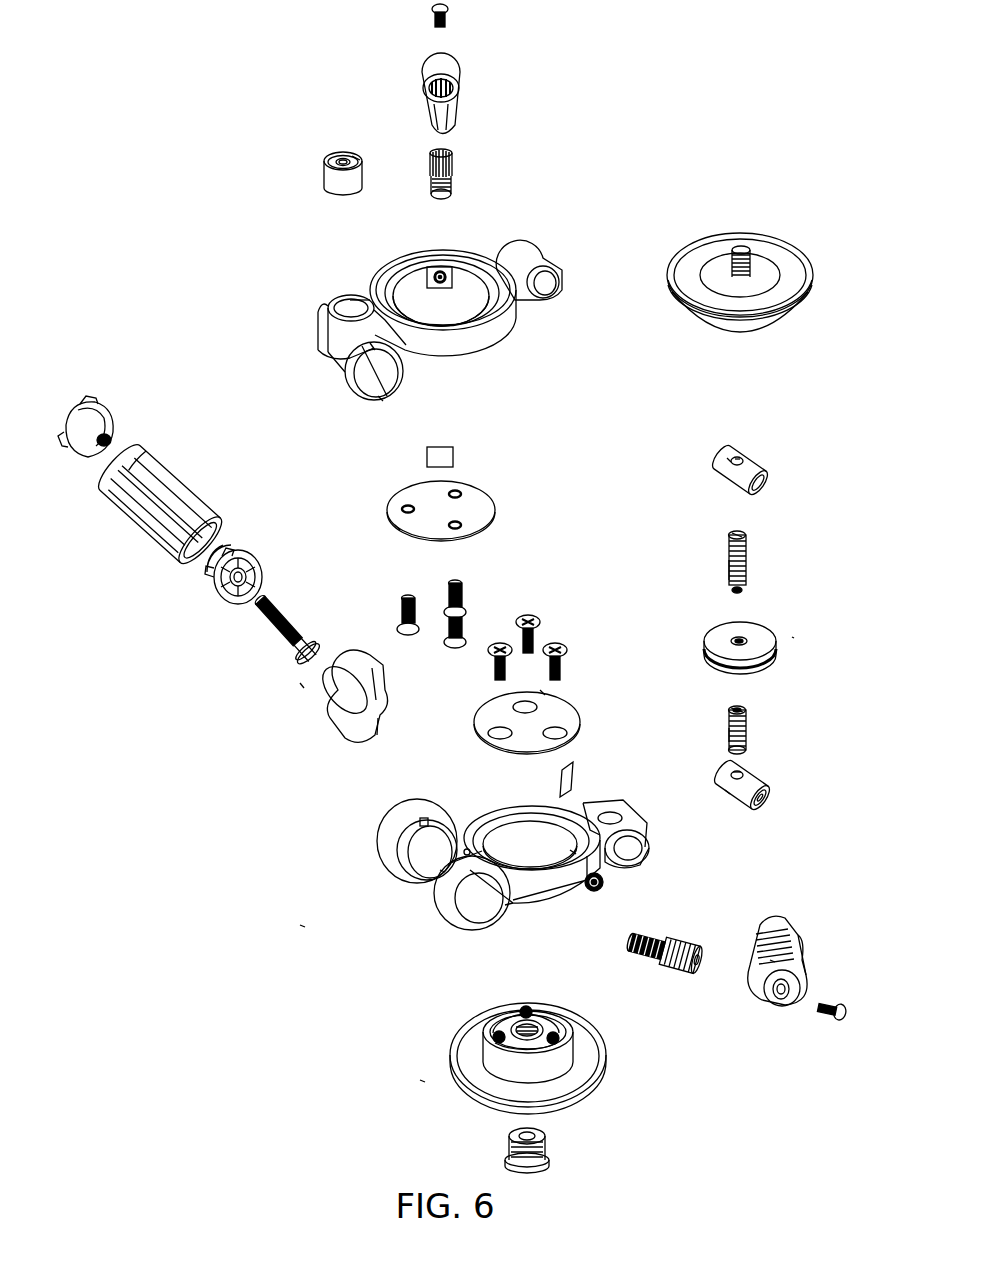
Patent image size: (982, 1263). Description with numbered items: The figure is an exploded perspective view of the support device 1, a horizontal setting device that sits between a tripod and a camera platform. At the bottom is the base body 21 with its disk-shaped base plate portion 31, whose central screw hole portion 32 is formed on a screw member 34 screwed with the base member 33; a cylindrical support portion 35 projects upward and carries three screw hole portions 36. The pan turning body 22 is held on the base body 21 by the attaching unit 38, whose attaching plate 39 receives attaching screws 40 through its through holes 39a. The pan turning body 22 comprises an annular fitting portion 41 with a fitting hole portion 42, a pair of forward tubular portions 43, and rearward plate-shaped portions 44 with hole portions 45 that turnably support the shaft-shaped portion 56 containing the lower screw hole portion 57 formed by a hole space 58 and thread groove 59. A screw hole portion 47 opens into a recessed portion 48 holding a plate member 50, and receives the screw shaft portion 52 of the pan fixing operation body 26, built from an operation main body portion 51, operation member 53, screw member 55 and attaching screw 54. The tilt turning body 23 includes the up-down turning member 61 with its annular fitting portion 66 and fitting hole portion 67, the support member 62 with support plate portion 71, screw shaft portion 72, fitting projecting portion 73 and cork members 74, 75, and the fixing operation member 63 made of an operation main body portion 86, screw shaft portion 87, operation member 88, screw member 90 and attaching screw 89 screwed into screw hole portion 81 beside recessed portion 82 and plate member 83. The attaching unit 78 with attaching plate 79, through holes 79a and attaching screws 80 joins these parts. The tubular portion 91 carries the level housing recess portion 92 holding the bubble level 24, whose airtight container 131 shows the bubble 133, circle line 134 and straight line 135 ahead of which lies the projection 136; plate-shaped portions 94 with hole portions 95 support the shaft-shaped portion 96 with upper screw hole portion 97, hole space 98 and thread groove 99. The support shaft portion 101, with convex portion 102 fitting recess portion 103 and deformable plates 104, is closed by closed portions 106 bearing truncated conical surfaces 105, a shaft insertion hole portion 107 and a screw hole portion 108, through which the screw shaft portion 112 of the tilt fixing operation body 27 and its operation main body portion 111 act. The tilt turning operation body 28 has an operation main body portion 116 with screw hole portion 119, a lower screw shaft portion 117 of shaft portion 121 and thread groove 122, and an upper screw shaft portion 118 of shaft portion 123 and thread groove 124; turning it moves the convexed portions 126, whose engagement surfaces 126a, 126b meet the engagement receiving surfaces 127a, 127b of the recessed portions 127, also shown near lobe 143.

The support device 1 is at (288, 930).
The base body 21 is at (403, 1070).
The pan turning body 22 is at (362, 855).
The tilt turning body 23 is at (227, 282).
The bubble level 24 is at (343, 156).
The pan fixing operation body 26 is at (810, 920).
The tilt fixing operation body 27 is at (295, 690).
The tilt turning operation body 28 is at (792, 634).
The base plate portion 31 is at (585, 1048).
The screw hole portion 32 is at (537, 1132).
The base member 33 is at (602, 1080).
The screw member 34 is at (548, 1158).
The support portion 35 is at (502, 1063).
The screw hole portions 36 is at (497, 1032).
The attaching unit 38 is at (561, 624).
The attaching plate 39 is at (570, 712).
The through holes 39a is at (523, 701).
The attaching screws 40 is at (528, 614).
The annular fitting portion 41 is at (557, 877).
The fitting hole portion 42 is at (528, 860).
The tubular portions 43 is at (442, 900).
The plate-shaped portions 44 is at (618, 803).
The hole portions 45 is at (610, 814).
The screw hole portion 47 is at (597, 888).
The recessed portion 48 is at (573, 853).
The plate member 50 is at (559, 788).
The operation main body portion 51 is at (775, 927).
The screw shaft portion 52 is at (650, 933).
The operation member 53 is at (797, 950).
The attaching screw 54 is at (833, 1002).
The screw member 55 is at (650, 957).
The shaft-shaped portion 56 is at (760, 783).
The lower screw hole portion 57 is at (743, 775).
The hole space 58 is at (733, 773).
The thread groove 59 is at (740, 780).
The up-down turning member 61 is at (500, 332).
The support member 62 is at (688, 277).
The fixing operation member 63 is at (462, 74).
The annular fitting portion 66 is at (478, 342).
The fitting hole portion 67 is at (447, 312).
The support plate portion 71 is at (813, 280).
The screw shaft portion 72 is at (743, 246).
The fitting projecting portion 73 is at (747, 334).
The cork member 74 is at (695, 252).
The cork member 75 is at (717, 280).
The attaching unit 78 is at (400, 480).
The attaching plate 79 is at (413, 526).
The through holes 79a is at (404, 508).
The attaching screws 80 is at (402, 612).
The screw hole portion 81 is at (445, 271).
The recessed portion 82 is at (432, 267).
The plate member 83 is at (453, 452).
The operation main body portion 86 is at (450, 57).
The screw shaft portion 87 is at (455, 188).
The operation member 88 is at (454, 113).
The attaching screw 89 is at (449, 9).
The screw member 90 is at (455, 158).
The tubular portion 91 is at (330, 365).
The level housing recess portion 92 is at (351, 298).
The plate-shaped portions 94 is at (530, 243).
The hole portions 95 is at (517, 257).
The shaft-shaped portion 96 is at (758, 470).
The upper screw hole portion 97 is at (742, 461).
The hole space 98 is at (738, 458).
The thread groove 99 is at (730, 459).
The support shaft portion 101 is at (143, 503).
The convex portion 102 is at (182, 478).
The recess portion 103 is at (392, 383).
The deformable plates 104 is at (135, 450).
The truncated conical surfaces 105 is at (88, 405).
The closed portions 106 is at (82, 400).
The shaft insertion hole portion 107 is at (239, 583).
The screw hole portion 108 is at (108, 437).
The operation main body portion 111 is at (372, 705).
The screw shaft portion 112 is at (290, 615).
The operation main body portion 116 is at (755, 630).
The lower screw shaft portion 117 is at (748, 713).
The upper screw shaft portion 118 is at (748, 547).
The screw hole portion 119 is at (735, 638).
The shaft portion 121 is at (729, 711).
The thread groove 122 is at (729, 730).
The shaft portion 123 is at (729, 541).
The thread groove 124 is at (729, 568).
The convexed portions 126 is at (357, 385).
The one side engagement surface 126a is at (372, 343).
The other side engagement surface 126b is at (376, 398).
The recessed portions 127 is at (423, 820).
The one side engagement receiving surface 127a is at (423, 826).
The other side engagement receiving surface 127b is at (428, 827).
The airtight container 131 is at (323, 172).
The bubble 133 is at (347, 158).
The circle line 134 is at (353, 160).
The straight line 135 is at (330, 160).
The projection 136 is at (328, 306).
The pivot lobe 143 is at (405, 810).